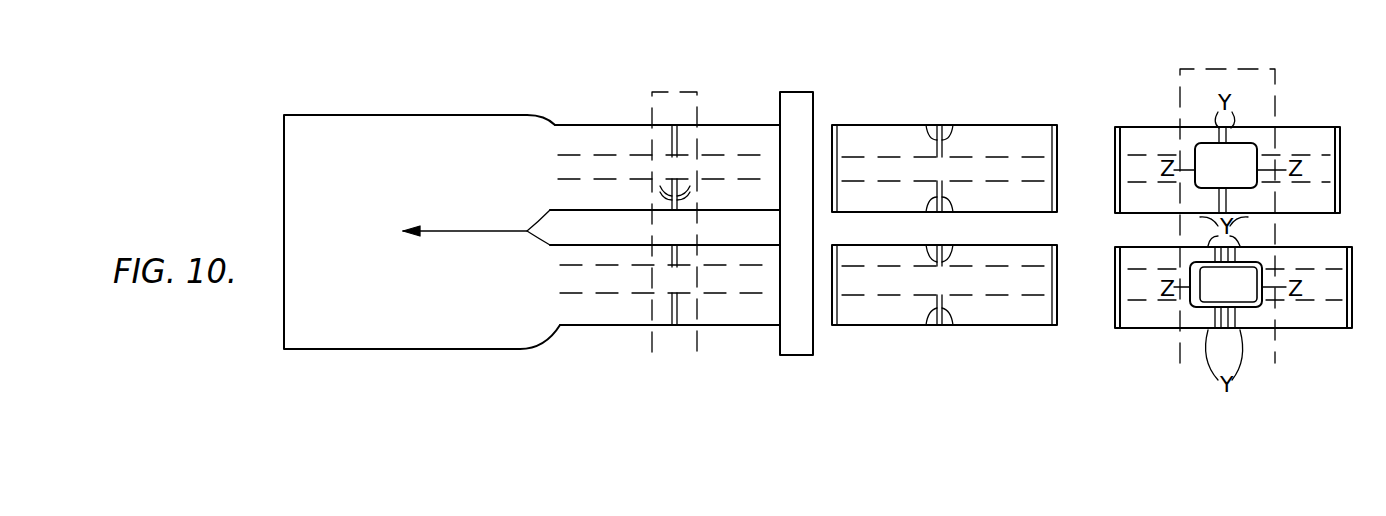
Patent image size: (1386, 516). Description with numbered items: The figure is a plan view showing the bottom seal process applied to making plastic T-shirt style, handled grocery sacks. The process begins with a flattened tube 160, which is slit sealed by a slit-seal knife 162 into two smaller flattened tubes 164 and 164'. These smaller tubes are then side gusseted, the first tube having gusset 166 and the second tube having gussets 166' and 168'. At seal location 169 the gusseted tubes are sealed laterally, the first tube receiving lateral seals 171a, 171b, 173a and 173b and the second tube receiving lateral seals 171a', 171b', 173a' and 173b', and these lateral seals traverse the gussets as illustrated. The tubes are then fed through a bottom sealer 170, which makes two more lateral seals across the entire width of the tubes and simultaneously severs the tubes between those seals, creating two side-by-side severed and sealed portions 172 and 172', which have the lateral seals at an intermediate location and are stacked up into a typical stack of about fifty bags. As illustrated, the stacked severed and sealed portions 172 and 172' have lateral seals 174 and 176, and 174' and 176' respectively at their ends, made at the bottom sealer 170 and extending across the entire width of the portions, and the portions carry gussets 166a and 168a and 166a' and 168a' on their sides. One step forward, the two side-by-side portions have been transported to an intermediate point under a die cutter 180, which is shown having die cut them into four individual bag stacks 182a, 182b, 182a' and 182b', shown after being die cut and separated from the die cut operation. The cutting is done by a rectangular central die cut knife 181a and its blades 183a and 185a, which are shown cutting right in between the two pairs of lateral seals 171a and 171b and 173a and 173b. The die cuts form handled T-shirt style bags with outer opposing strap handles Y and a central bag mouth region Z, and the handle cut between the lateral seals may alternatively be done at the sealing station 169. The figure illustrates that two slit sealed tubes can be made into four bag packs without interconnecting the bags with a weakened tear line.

The flattened tube 160 is at (343, 143).
The slit-seal knife 162 is at (411, 214).
The smaller flattened tube 164 is at (511, 108).
The smaller flattened tube 164' is at (506, 360).
The side gusset 166 is at (665, 145).
The side gusset 166' is at (658, 321).
The side gusset 168' is at (598, 354).
The seal location 169 is at (676, 102).
The bottom sealer 170 is at (799, 110).
The lateral seal 171a is at (915, 187).
The lateral seal 171b is at (997, 189).
The lateral seal 171a' is at (773, 334).
The lateral seal 171b' is at (835, 300).
The severed and sealed portion 172 is at (897, 90).
The severed and sealed portion 172' is at (904, 368).
The lateral seal 173a is at (899, 214).
The lateral seal 173b is at (1002, 216).
The lateral seal 173a' is at (806, 367).
The lateral seal 173b' is at (848, 344).
The lateral seal 174 is at (832, 112).
The lateral seal 174' is at (800, 357).
The gusset 166a is at (944, 147).
The gusset 166a' is at (938, 303).
The gusset 168a is at (878, 141).
The gusset 168a' is at (857, 345).
The lateral seal 176 is at (1064, 117).
The lateral seal 176' is at (1067, 328).
The die cutter 180 is at (1197, 68).
The rectangular central die cut knife 181a is at (1228, 143).
The individual bag stack 182a is at (1161, 138).
The individual bag stack 182b is at (1303, 143).
The individual bag stack 182a' is at (1172, 312).
The individual bag stack 182b' is at (1294, 312).
The blade 183a is at (1205, 140).
The blade 185a is at (1200, 247).